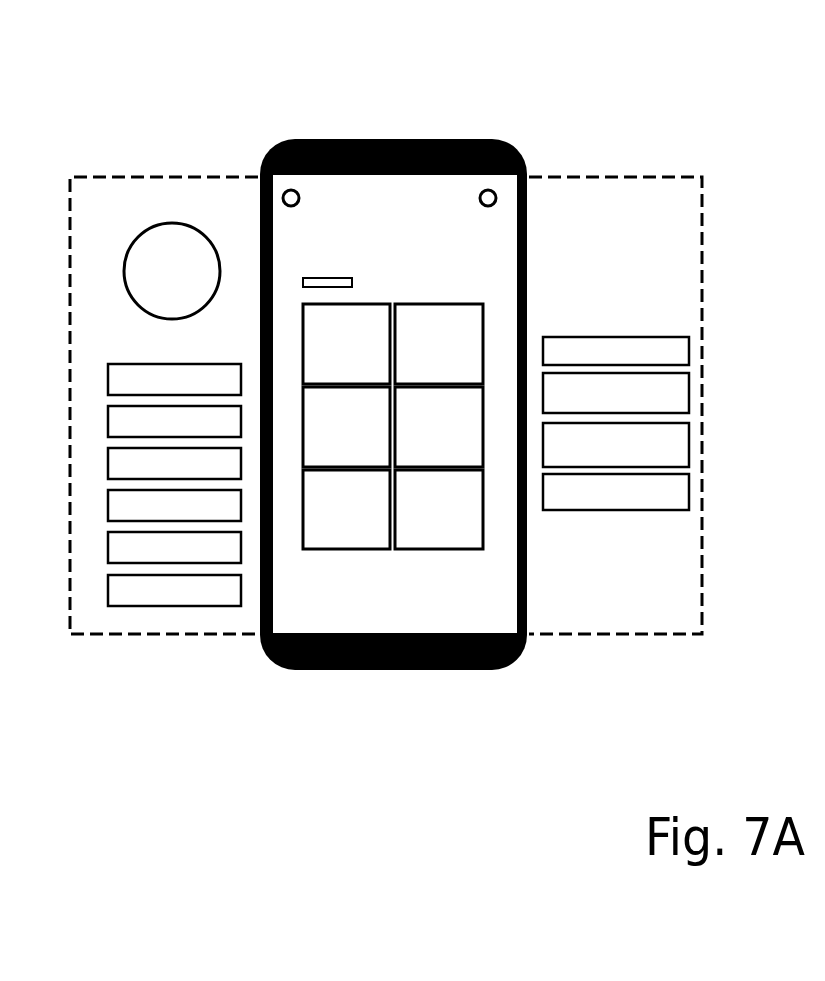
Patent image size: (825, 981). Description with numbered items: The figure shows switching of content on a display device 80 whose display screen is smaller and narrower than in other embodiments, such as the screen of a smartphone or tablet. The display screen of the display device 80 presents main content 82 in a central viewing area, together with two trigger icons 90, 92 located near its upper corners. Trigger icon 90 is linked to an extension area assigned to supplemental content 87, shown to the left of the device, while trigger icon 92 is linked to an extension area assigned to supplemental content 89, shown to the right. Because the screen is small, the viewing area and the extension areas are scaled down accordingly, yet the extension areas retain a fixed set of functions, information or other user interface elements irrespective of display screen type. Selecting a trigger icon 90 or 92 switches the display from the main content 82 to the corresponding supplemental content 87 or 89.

The display device 80 is at (423, 72).
The main content 82 is at (411, 268).
The supplemental content 87 is at (190, 210).
The supplemental content 89 is at (625, 236).
The trigger icon 90 is at (299, 197).
The trigger icon 92 is at (480, 203).